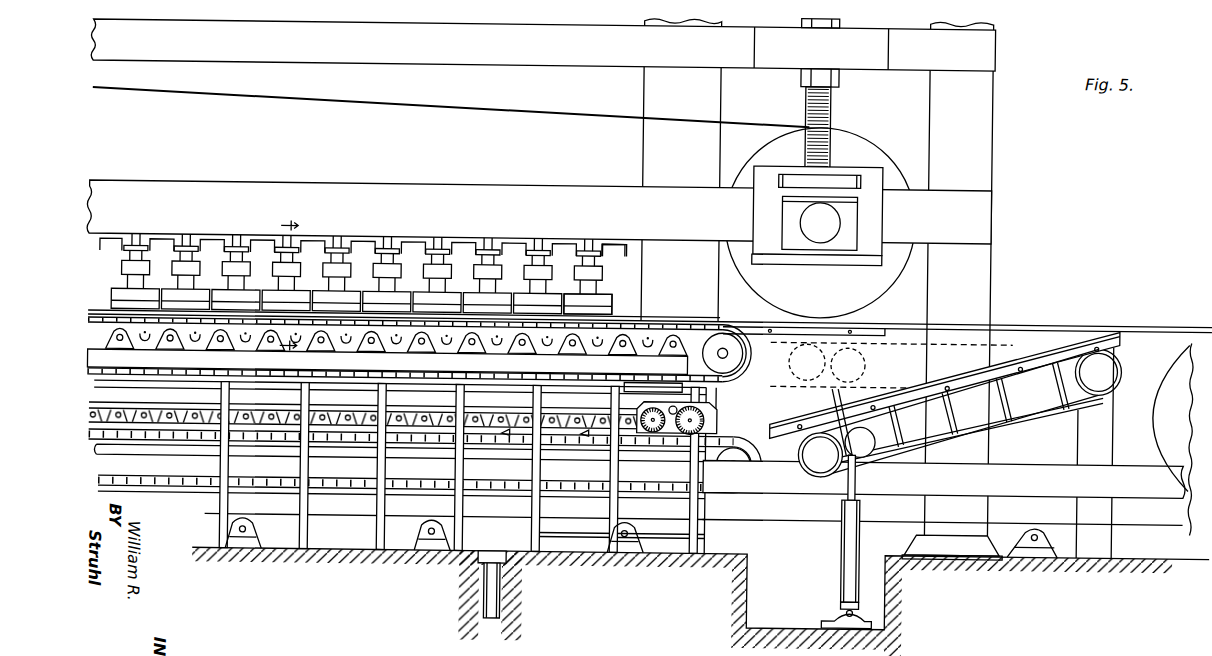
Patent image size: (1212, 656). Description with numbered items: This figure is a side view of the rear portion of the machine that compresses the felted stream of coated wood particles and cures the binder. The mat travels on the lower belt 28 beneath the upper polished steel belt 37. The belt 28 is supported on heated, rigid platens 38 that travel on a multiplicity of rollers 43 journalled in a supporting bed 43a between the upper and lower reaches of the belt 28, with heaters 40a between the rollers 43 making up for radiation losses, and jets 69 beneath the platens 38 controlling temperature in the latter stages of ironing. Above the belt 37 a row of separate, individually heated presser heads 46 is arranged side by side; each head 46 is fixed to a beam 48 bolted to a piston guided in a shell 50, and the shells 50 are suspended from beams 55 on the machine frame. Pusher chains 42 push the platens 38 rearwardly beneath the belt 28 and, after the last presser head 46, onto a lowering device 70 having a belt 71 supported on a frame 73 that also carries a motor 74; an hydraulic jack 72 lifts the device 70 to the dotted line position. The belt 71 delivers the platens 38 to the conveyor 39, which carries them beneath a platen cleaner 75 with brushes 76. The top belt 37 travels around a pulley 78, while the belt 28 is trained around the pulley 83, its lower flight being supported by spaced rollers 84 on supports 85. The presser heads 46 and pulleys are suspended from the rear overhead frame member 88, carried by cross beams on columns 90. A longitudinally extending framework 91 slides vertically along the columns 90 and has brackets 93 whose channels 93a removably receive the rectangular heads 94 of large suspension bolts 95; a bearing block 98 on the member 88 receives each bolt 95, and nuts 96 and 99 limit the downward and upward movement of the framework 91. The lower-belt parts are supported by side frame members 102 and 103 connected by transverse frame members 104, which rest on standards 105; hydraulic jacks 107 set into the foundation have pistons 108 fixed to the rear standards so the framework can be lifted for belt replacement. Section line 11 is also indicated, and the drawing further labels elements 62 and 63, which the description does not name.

The section line 11 is at (301, 283).
The belt 28 is at (1110, 313).
The upper polished steel belt 37 is at (565, 108).
The platens 38 is at (782, 326).
The conveyor 39 is at (595, 482).
The heaters 40a is at (203, 351).
The pusher chains 42 is at (740, 372).
The rollers 43 is at (120, 345).
The supporting bed 43a is at (88, 362).
The presser heads 46 is at (340, 309).
The beam 48 is at (607, 298).
The shell 50 is at (237, 275).
The beams 55 is at (158, 236).
The chain 62 is at (700, 318).
The chain lug 63 is at (582, 428).
The jets 69 is at (492, 348).
The lowering device 70 is at (1027, 414).
The belt 71 is at (980, 431).
The hydraulic jack 72 is at (845, 552).
The frame 73 is at (945, 407).
The motor 74 is at (870, 445).
The platen cleaner 75 is at (718, 412).
The brushes 76 is at (688, 416).
The pulley 78 is at (828, 296).
The pulley 83 is at (1174, 411).
The rollers 84 is at (1027, 519).
The supports 85 is at (1042, 545).
The overhead frame member 88 is at (968, 62).
The columns 90 is at (688, 162).
The framework 91 is at (685, 233).
The brackets 93 is at (876, 171).
The channels 93a is at (790, 172).
The heads 94 is at (838, 166).
The suspension bolts 95 is at (845, 131).
The nuts 96 is at (838, 16).
The bearing block 98 is at (862, 47).
The nuts 99 is at (836, 70).
The side frame member 102 is at (1065, 477).
The side frame member 103 is at (793, 477).
The frame members 104 is at (360, 402).
The standards 105 is at (377, 528).
The hydraulic jacks 107 is at (505, 614).
The pistons 108 is at (505, 555).